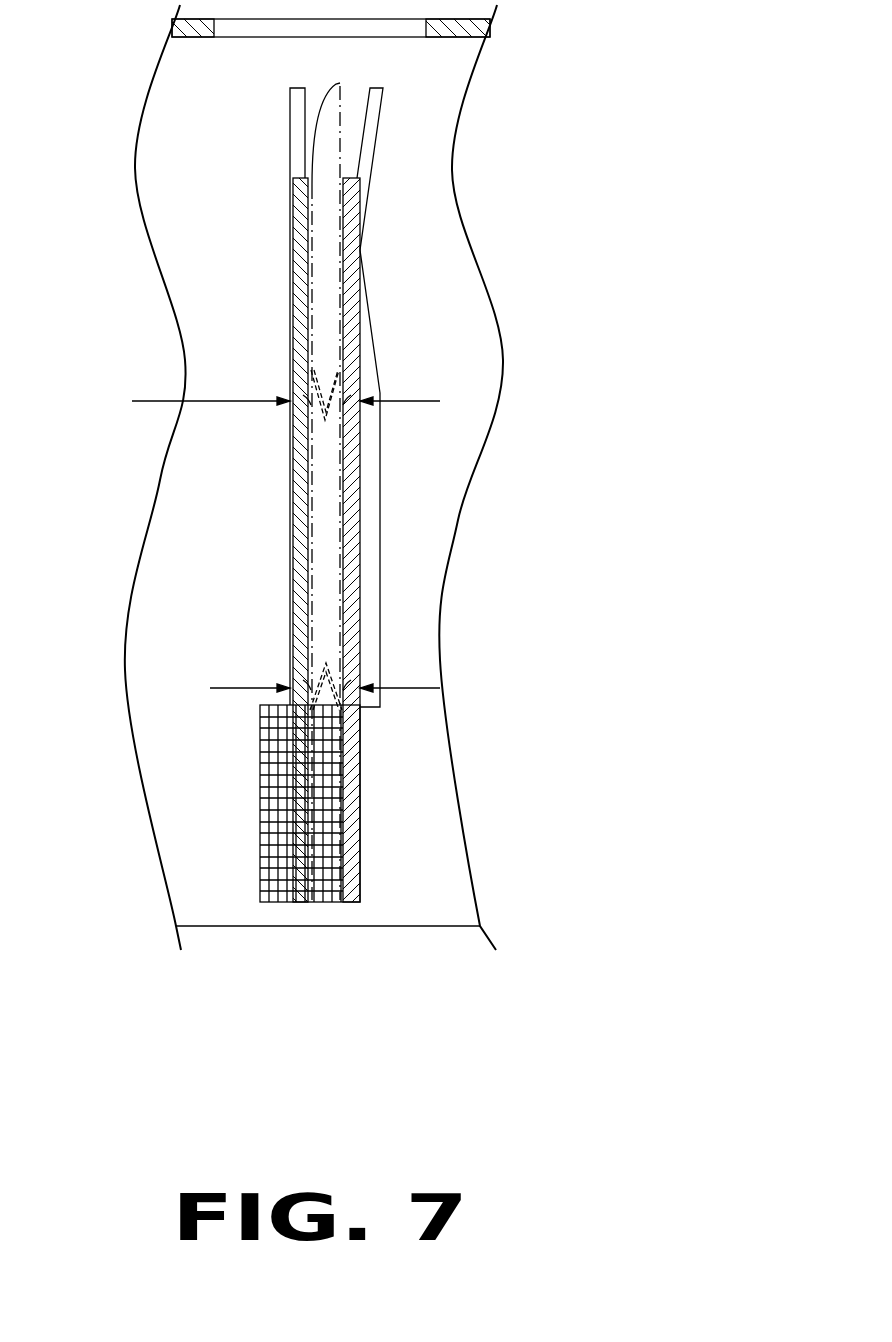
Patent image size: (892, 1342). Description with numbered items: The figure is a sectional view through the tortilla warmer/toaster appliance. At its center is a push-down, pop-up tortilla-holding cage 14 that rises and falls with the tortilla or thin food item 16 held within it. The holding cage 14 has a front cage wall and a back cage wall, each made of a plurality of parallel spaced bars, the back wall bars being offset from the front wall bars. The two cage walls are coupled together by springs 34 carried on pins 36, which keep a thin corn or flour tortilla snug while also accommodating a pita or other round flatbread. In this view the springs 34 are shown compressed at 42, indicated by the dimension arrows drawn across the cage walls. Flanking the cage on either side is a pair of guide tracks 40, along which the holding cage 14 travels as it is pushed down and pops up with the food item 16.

The tortilla-holding cage 14 is at (361, 548).
The tortilla or thin food item 16 is at (327, 477).
The springs 34 is at (310, 367).
The pins 36 is at (380, 389).
The guide tracks 40 is at (297, 143).
The compressed springs location 42 is at (254, 525).